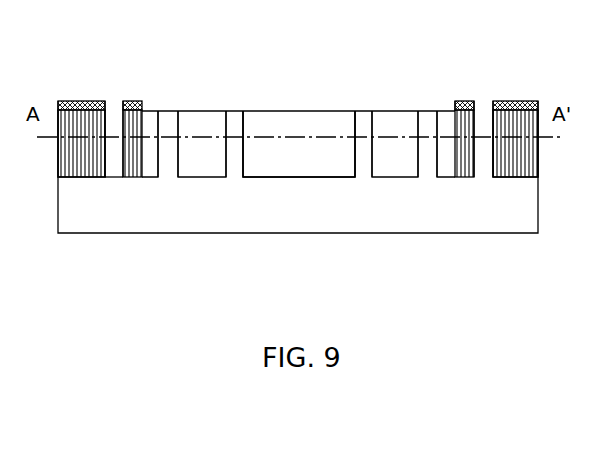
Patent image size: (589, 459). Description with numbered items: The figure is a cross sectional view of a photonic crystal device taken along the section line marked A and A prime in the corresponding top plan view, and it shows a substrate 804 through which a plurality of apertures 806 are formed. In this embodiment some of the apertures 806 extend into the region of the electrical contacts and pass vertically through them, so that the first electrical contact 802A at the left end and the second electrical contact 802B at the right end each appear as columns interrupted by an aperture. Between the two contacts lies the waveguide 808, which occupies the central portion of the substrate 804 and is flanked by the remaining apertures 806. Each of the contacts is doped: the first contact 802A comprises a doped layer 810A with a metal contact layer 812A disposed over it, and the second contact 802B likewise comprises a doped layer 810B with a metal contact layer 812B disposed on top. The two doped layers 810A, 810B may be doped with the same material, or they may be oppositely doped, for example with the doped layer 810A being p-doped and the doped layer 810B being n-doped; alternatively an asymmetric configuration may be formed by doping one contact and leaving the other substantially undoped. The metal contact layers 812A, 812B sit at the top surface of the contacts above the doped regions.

The first electrical contact 802A is at (57, 155).
The second electrical contact 802B is at (535, 156).
The substrate 804 is at (308, 123).
The apertures 806 is at (430, 123).
The waveguide 808 is at (318, 169).
The doped layer 810A is at (92, 167).
The doped layer 810B is at (508, 162).
The metal contact layer 812A is at (87, 102).
The metal contact layer 812B is at (525, 100).